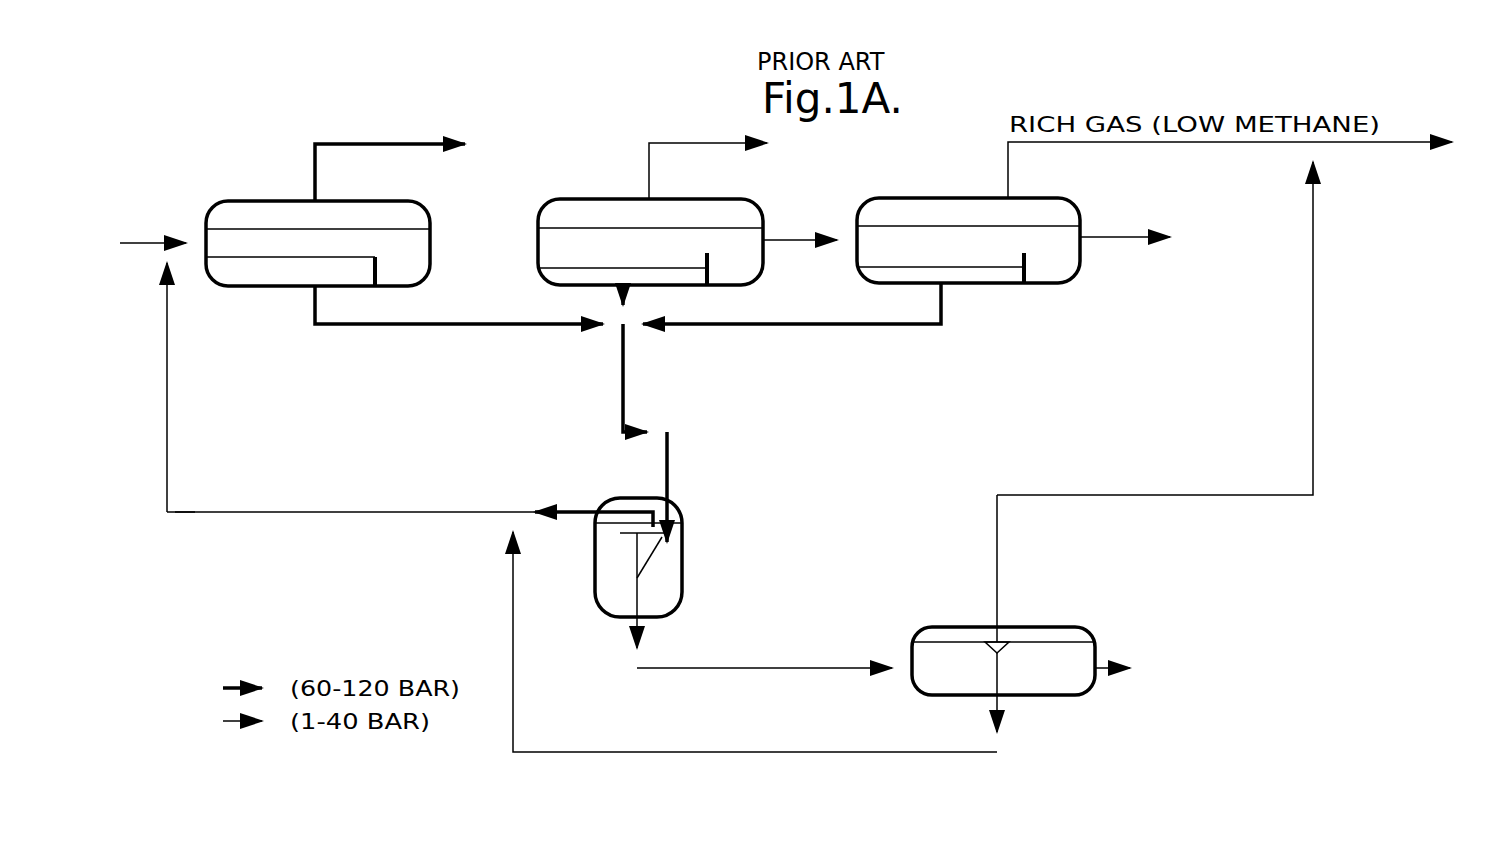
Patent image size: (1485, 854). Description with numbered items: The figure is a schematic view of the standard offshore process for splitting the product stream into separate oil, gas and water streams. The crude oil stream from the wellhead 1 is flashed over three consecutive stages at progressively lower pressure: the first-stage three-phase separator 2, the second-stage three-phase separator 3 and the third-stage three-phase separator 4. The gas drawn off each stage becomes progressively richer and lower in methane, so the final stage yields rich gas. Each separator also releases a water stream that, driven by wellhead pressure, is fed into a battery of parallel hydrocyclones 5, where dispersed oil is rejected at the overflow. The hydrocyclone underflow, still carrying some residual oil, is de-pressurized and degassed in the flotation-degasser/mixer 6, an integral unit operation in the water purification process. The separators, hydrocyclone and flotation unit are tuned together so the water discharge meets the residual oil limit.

The wellhead stream 1 is at (145, 243).
The first-stage three-phase separator 2 is at (254, 256).
The second-stage three-phase separator 3 is at (581, 256).
The third-stage three-phase separator 4 is at (898, 256).
The hydrocyclone 5 is at (624, 579).
The flotation-degasser/mixer 6 is at (946, 677).